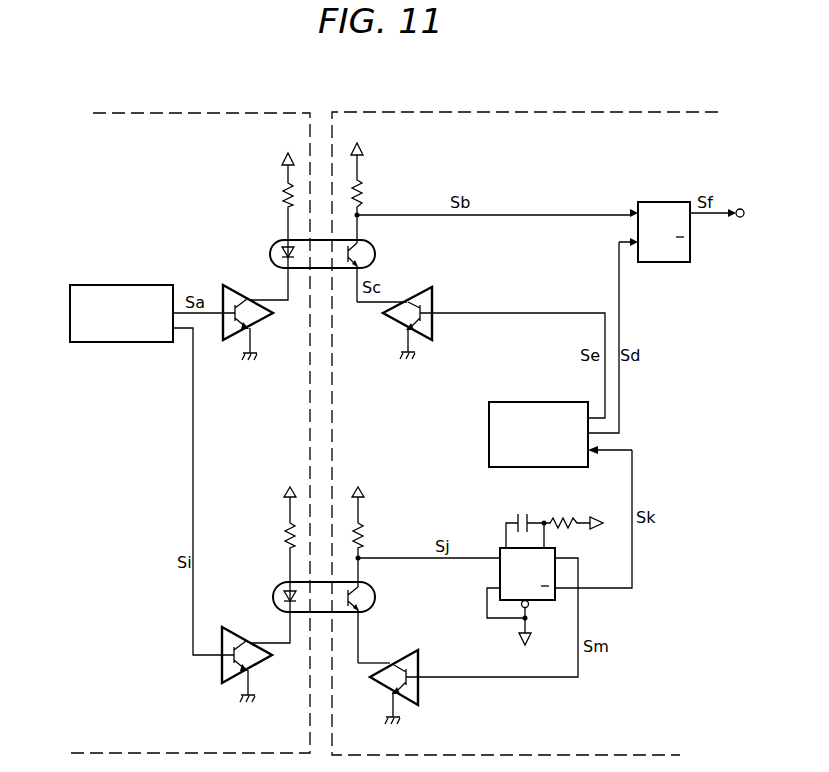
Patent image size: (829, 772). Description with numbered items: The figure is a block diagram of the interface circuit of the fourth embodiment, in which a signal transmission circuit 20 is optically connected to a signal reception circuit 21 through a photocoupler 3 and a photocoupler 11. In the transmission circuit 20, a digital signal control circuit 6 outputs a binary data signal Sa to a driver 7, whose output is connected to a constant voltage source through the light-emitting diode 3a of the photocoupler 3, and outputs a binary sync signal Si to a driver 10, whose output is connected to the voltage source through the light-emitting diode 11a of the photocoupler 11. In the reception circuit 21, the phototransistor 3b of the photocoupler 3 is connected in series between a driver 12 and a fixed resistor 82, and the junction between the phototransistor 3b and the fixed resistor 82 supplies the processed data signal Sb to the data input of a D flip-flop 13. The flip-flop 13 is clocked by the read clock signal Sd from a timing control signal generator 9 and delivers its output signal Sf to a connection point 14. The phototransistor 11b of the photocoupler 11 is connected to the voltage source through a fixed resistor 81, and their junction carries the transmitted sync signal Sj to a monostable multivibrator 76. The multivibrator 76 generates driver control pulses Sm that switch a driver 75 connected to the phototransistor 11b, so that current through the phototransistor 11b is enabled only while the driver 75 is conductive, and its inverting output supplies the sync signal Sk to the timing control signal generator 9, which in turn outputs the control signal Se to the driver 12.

The signal transmission circuit 20 is at (206, 112).
The signal reception circuit 21 is at (529, 111).
The digital signal control circuit 6 is at (121, 285).
The driver 7 is at (240, 285).
The photocoupler 3 is at (326, 235).
The light-emitting diode 3a is at (283, 252).
The phototransistor 3b is at (374, 249).
The fixed resistor 82 is at (366, 198).
The driver 12 is at (436, 296).
The D flip-flop 13 is at (660, 262).
The connection point 14 is at (717, 233).
The timing control signal generator 9 is at (538, 402).
The driver 10 is at (241, 627).
The photocoupler 11 is at (335, 575).
The light-emitting diode 11a is at (283, 596).
The phototransistor 11b is at (377, 596).
The fixed resistor 81 is at (368, 540).
The monostable multivibrator 76 is at (557, 552).
The driver 75 is at (421, 663).